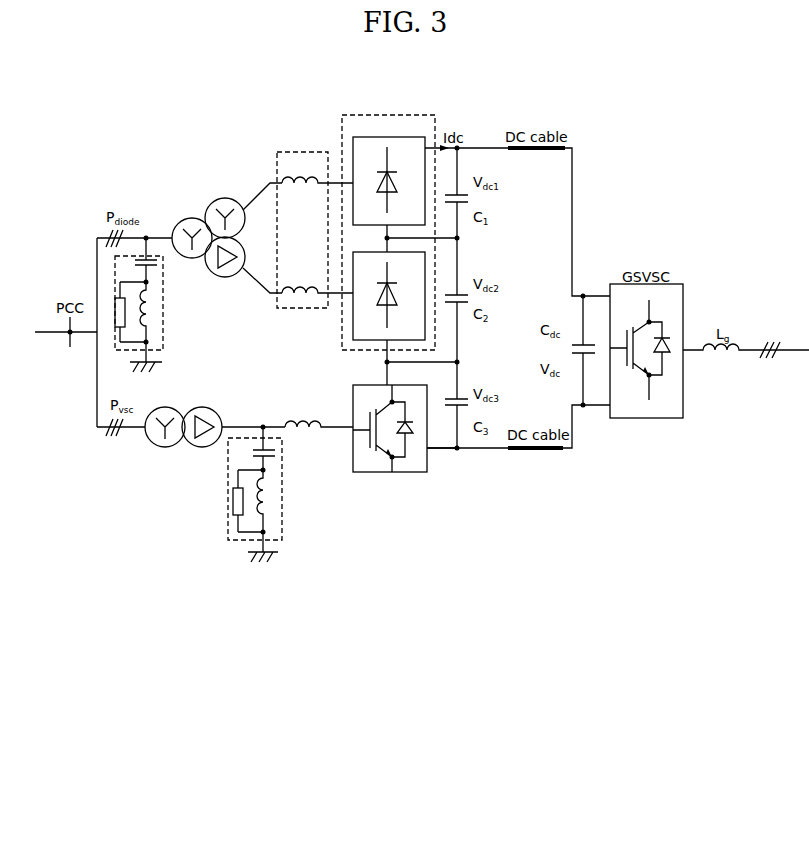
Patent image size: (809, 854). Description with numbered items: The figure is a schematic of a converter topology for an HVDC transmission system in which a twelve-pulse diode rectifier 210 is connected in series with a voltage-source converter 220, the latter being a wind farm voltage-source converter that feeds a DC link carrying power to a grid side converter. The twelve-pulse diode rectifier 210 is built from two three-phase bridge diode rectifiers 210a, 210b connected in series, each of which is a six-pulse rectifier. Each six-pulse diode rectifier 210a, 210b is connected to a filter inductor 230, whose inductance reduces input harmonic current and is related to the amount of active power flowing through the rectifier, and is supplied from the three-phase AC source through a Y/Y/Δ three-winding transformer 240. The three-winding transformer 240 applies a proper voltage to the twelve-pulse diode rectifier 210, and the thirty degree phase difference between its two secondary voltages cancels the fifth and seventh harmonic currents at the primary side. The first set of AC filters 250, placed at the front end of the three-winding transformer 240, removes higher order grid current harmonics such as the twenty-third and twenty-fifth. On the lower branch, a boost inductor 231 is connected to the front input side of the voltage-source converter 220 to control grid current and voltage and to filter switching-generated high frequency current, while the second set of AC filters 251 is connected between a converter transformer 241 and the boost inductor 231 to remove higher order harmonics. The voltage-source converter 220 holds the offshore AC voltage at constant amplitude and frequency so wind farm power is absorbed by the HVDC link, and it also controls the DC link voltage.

The 12-pulse diode rectifier 210 is at (370, 228).
The 6-pulse diode rectifier 210a is at (352, 153).
The 6-pulse diode rectifier 210b is at (352, 327).
The voltage-source converter 220 is at (408, 473).
The filter inductor 230 is at (274, 160).
The boost inductor 231 is at (308, 451).
The Y/Y/Δ three-winding transformer 240 is at (188, 201).
The converter transformer 241 is at (141, 450).
The AC filters 1 250 is at (108, 276).
The AC filters 2 251 is at (225, 517).